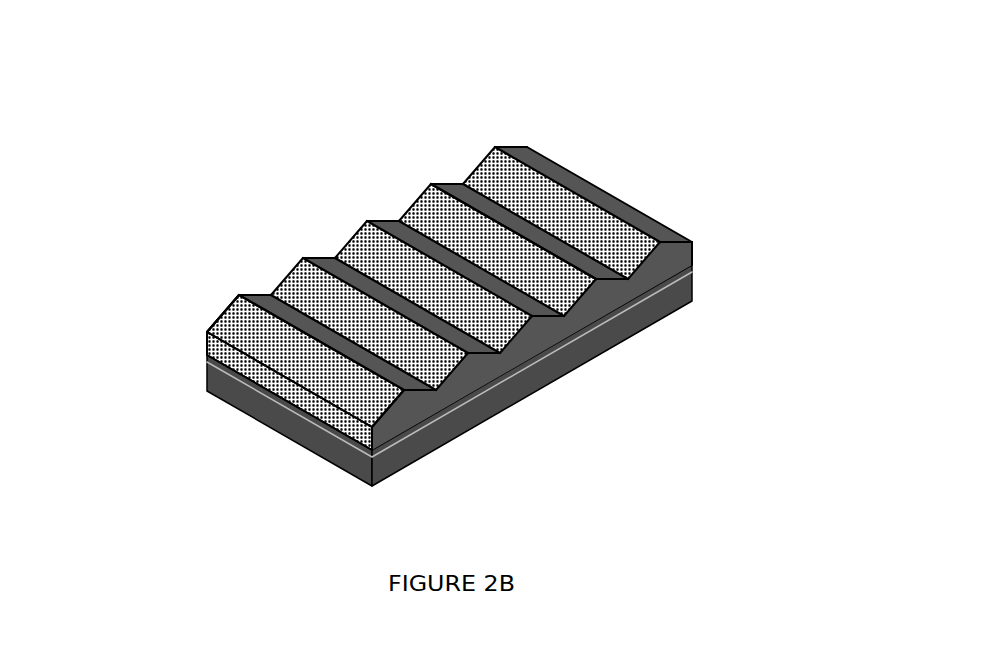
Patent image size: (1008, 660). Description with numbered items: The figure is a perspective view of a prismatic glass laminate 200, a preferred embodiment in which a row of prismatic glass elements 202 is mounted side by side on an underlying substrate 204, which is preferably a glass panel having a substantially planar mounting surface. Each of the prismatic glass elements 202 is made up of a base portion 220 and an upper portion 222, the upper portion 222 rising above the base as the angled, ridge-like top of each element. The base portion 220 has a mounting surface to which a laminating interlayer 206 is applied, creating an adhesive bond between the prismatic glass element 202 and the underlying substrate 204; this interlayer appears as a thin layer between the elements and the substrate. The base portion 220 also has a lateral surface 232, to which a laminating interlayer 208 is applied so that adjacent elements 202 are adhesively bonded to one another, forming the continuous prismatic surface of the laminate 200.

The prismatic glass laminate 200 is at (210, 85).
The prismatic glass elements 202 is at (680, 237).
The underlying substrate 204 is at (600, 350).
The laminating interlayer 206 is at (694, 270).
The laminating interlayer 208 is at (462, 185).
The base portion 220 is at (188, 349).
The upper portion 222 is at (206, 296).
The lateral surface 232 is at (302, 397).